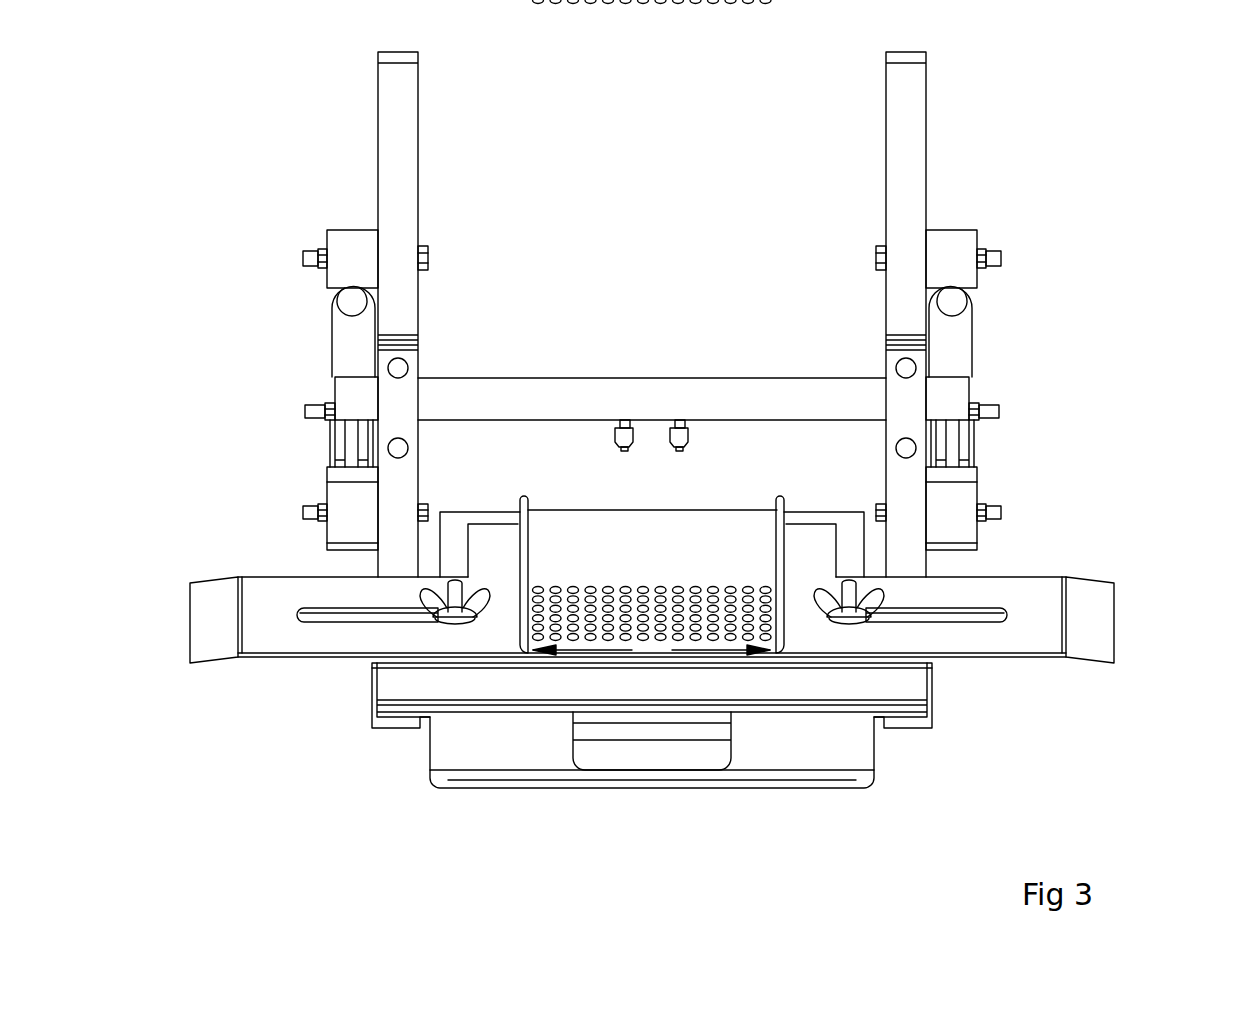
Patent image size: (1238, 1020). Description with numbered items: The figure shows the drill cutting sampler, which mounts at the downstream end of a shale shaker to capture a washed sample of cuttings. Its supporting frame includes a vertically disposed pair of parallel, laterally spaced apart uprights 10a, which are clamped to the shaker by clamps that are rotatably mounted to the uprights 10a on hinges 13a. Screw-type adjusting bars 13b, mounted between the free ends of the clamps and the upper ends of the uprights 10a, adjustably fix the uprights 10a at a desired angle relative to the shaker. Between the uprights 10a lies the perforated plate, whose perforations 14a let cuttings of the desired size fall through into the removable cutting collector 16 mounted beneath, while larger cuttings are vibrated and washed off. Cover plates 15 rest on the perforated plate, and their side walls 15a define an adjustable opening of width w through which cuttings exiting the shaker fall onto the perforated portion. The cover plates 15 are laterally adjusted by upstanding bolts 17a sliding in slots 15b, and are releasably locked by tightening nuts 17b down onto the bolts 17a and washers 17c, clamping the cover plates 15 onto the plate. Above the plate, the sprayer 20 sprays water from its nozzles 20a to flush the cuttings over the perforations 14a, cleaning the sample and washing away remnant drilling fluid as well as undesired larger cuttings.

The uprights 10a is at (378, 113).
The hinges 13a is at (325, 498).
The screw-type adjusting bars 13b is at (332, 335).
The perforations 14a is at (612, 590).
The cover plates 15 is at (300, 637).
The side walls 15a is at (521, 500).
The slots 15b is at (383, 617).
The cutting collector 16 is at (478, 815).
The bolts 17a is at (452, 582).
The nuts 17b is at (448, 622).
The washers 17c is at (467, 622).
The sprayer 20 is at (508, 372).
The nozzles 20a is at (633, 436).